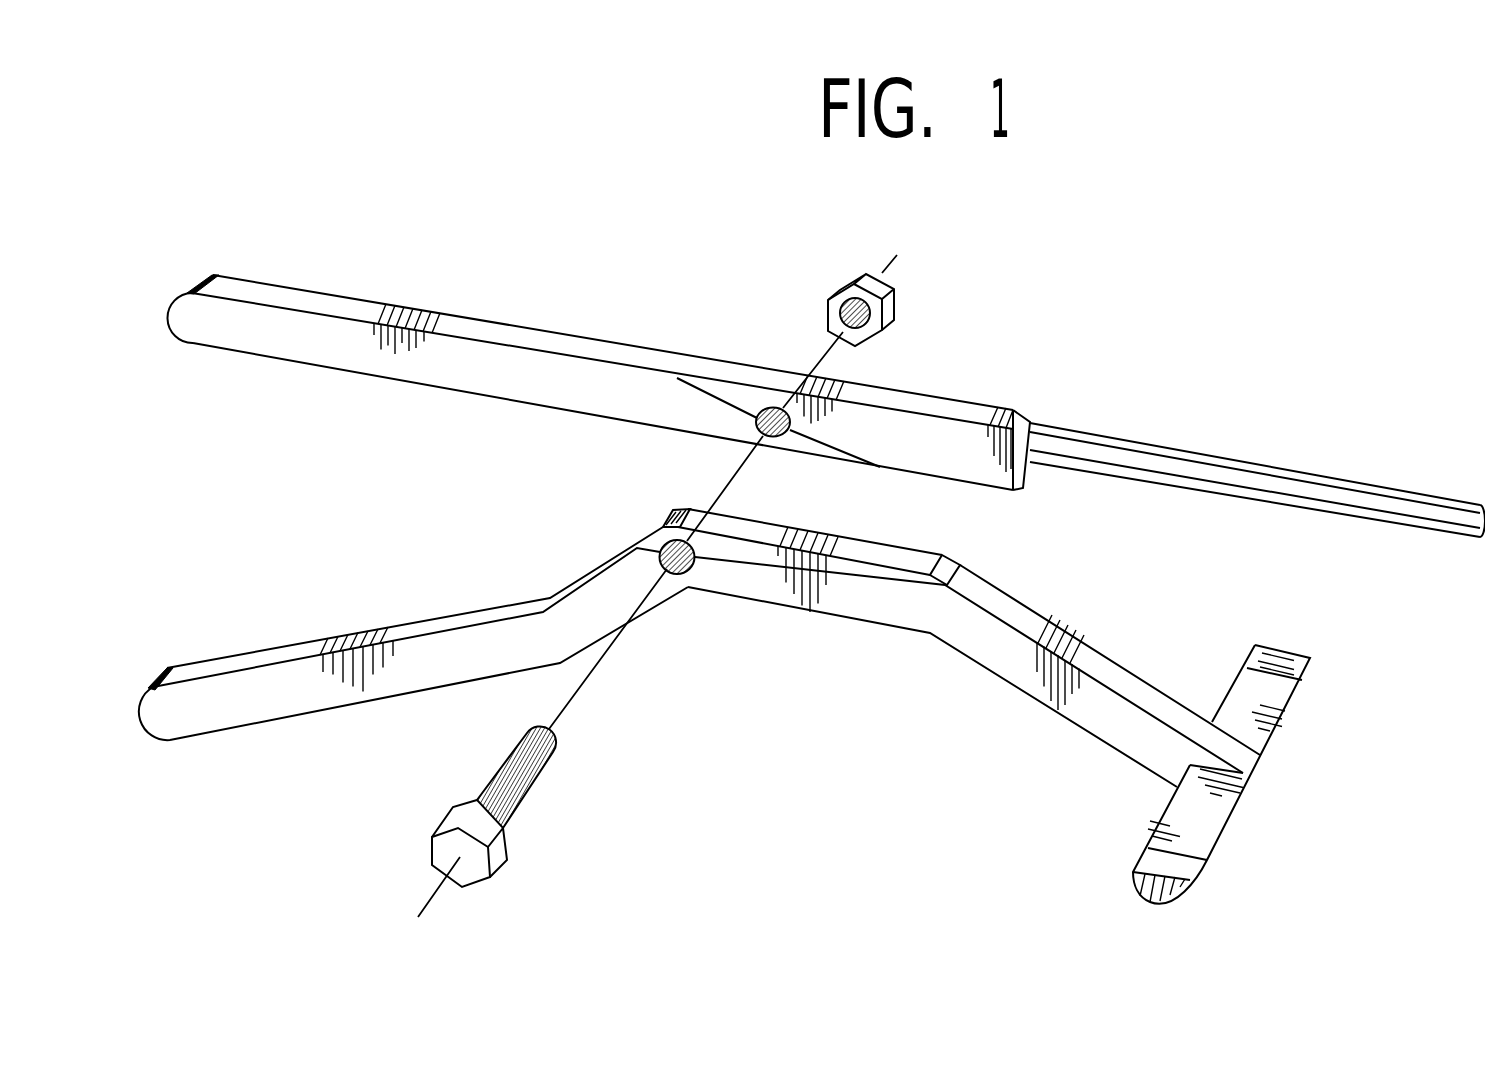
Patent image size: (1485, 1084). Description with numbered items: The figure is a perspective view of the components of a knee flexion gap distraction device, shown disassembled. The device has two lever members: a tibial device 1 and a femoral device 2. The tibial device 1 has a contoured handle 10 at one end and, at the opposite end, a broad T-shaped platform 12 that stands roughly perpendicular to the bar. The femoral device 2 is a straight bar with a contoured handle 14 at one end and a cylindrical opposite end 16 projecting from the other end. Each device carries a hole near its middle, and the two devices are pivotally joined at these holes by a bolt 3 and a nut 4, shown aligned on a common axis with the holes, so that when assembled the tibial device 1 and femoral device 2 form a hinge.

The tibial device 1 is at (724, 706).
The femoral device 2 is at (598, 377).
The bolt 3 is at (423, 843).
The nut 4 is at (847, 287).
The contoured handle 10 is at (410, 650).
The T-shaped platform 12 is at (1150, 833).
The contoured handle 14 is at (503, 357).
The cylindrical opposite end 16 is at (1315, 492).